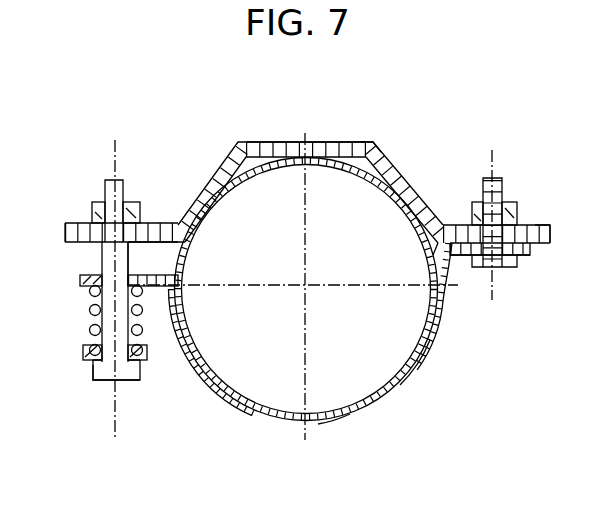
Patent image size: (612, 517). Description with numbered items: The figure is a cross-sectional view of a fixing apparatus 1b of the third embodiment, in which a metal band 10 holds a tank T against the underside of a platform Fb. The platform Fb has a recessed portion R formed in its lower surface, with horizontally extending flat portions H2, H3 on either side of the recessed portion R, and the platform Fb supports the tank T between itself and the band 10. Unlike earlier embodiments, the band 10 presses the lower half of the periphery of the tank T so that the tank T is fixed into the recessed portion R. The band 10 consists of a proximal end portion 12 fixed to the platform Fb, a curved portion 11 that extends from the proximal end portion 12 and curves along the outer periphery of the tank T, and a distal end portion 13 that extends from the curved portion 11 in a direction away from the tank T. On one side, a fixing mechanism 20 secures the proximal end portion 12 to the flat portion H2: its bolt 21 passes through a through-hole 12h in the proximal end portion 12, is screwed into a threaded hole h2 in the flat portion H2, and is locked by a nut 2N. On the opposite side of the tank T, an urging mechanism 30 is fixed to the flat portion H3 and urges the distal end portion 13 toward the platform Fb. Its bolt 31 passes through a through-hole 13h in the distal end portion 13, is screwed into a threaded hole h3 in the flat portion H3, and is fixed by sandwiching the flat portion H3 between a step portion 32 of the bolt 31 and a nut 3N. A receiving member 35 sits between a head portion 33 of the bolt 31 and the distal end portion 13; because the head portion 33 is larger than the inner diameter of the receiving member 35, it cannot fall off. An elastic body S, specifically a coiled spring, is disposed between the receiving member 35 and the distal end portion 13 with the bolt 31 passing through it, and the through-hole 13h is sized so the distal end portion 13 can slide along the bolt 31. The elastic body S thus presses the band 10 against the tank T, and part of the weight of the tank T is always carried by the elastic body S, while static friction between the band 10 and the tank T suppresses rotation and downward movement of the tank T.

The band 10 is at (294, 422).
The curved portion 11 is at (418, 366).
The tank T is at (330, 397).
The fixing apparatus 1b is at (398, 128).
The platform Fb is at (237, 141).
The recessed portion R is at (367, 140).
The proximal end portion 12 is at (467, 258).
The through-hole 12h is at (497, 268).
The distal end portion 13 is at (164, 295).
The through-hole 13h is at (134, 279).
The fixing mechanism 20 is at (505, 332).
The bolt 21 is at (519, 258).
The nut 2N is at (511, 204).
The flat portion H2 is at (539, 225).
The threaded hole h2 is at (488, 200).
The urging mechanism 30 is at (77, 382).
The bolt 31 is at (80, 282).
The step portion 32 is at (107, 246).
The head portion 33 is at (129, 383).
The receiving member 35 is at (83, 354).
The elastic body S is at (90, 332).
The nut 3N is at (92, 212).
The flat portion H3 is at (150, 223).
The threaded hole h3 is at (122, 203).